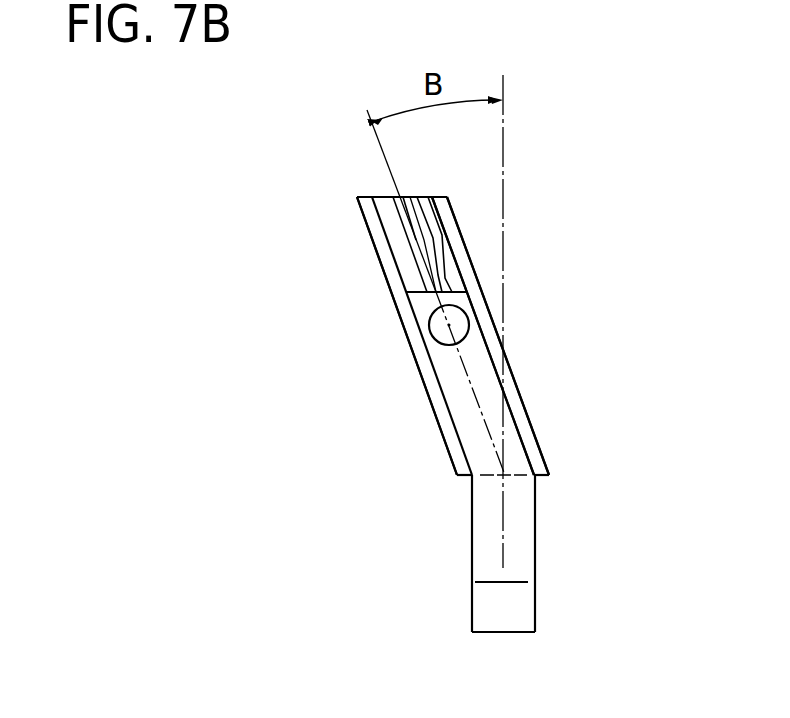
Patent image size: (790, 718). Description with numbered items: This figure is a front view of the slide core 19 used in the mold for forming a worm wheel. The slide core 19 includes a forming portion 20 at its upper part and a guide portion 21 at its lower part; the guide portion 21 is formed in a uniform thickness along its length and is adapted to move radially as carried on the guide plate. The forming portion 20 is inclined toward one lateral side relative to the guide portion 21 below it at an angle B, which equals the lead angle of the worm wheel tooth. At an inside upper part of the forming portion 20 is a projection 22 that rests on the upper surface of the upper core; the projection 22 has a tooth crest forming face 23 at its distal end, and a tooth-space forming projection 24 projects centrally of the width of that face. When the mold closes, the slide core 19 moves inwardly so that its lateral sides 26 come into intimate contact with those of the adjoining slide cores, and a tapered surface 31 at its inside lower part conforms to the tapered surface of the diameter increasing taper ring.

The slide core 19 is at (427, 400).
The forming portion 20 is at (380, 262).
The guide portion 21 is at (472, 532).
The projection 22 is at (437, 213).
The tooth crest forming face 23 is at (387, 207).
The tooth-space forming projection 24 is at (418, 238).
The lateral side 26 is at (400, 317).
The tapered surface 31 is at (518, 598).